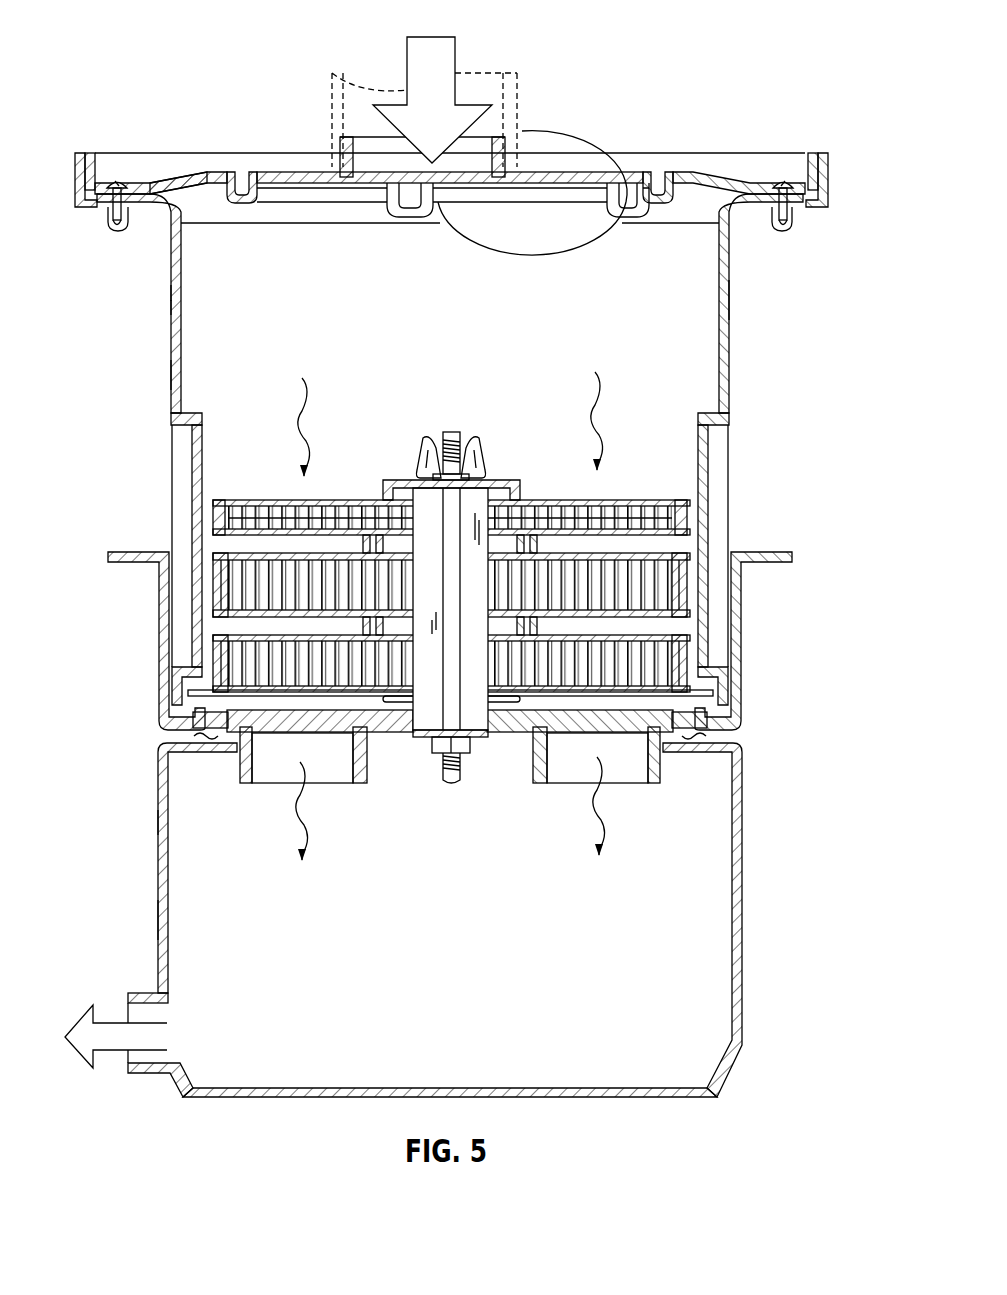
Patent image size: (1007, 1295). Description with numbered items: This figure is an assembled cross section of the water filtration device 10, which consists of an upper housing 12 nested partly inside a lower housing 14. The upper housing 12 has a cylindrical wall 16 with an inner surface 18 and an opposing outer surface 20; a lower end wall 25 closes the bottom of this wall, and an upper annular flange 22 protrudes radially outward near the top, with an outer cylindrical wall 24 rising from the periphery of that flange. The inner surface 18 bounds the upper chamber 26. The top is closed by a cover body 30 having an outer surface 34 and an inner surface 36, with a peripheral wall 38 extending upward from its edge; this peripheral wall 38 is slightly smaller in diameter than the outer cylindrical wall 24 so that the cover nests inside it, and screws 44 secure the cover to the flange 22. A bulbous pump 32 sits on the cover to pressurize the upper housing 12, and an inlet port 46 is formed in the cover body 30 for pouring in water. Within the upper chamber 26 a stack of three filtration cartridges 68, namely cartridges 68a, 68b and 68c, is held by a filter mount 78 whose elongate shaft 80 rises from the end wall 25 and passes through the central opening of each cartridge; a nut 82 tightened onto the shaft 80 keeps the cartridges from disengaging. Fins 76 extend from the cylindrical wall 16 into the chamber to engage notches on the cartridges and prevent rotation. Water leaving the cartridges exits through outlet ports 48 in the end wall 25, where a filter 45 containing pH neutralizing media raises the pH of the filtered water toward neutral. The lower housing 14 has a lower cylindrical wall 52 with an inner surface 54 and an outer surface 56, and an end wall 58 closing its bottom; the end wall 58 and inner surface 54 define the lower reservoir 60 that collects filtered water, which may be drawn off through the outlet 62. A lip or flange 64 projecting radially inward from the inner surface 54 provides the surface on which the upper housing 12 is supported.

The water filtration device 10 is at (138, 52).
The upper housing 12 is at (158, 327).
The lower housing 14 is at (748, 905).
The cylindrical wall 16 is at (738, 297).
The inner surface 18 is at (175, 310).
The outer surface 20 is at (172, 371).
The upper annular flange 22 is at (100, 210).
The outer cylindrical wall 24 is at (78, 160).
The lower end wall 25 is at (194, 738).
The upper chamber 26 is at (426, 327).
The cover body 30 is at (687, 168).
The pump 32 is at (553, 143).
The outer surface 34 is at (205, 172).
The inner surface 36 is at (307, 190).
The peripheral wall 38 is at (93, 165).
The screws 44 is at (780, 183).
The filter 45 is at (290, 708).
The inlet port 46 is at (368, 155).
The outlet ports 48 is at (245, 763).
The lower cylindrical wall 52 is at (155, 868).
The inner surface 54 is at (165, 935).
The outer surface 56 is at (158, 822).
The end wall 58 is at (560, 1096).
The lower reservoir 60 is at (437, 940).
The outlet 62 is at (128, 1058).
The lip or flange 64 is at (706, 737).
The filtration cartridges 68 is at (520, 573).
The filtration cartridge 68a is at (694, 497).
The filtration cartridge 68b is at (694, 585).
The filtration cartridge 68c is at (696, 653).
The fins 76 is at (197, 437).
The filter mount 78 is at (481, 423).
The elongate shaft 80 is at (420, 492).
The nut 82 is at (420, 440).